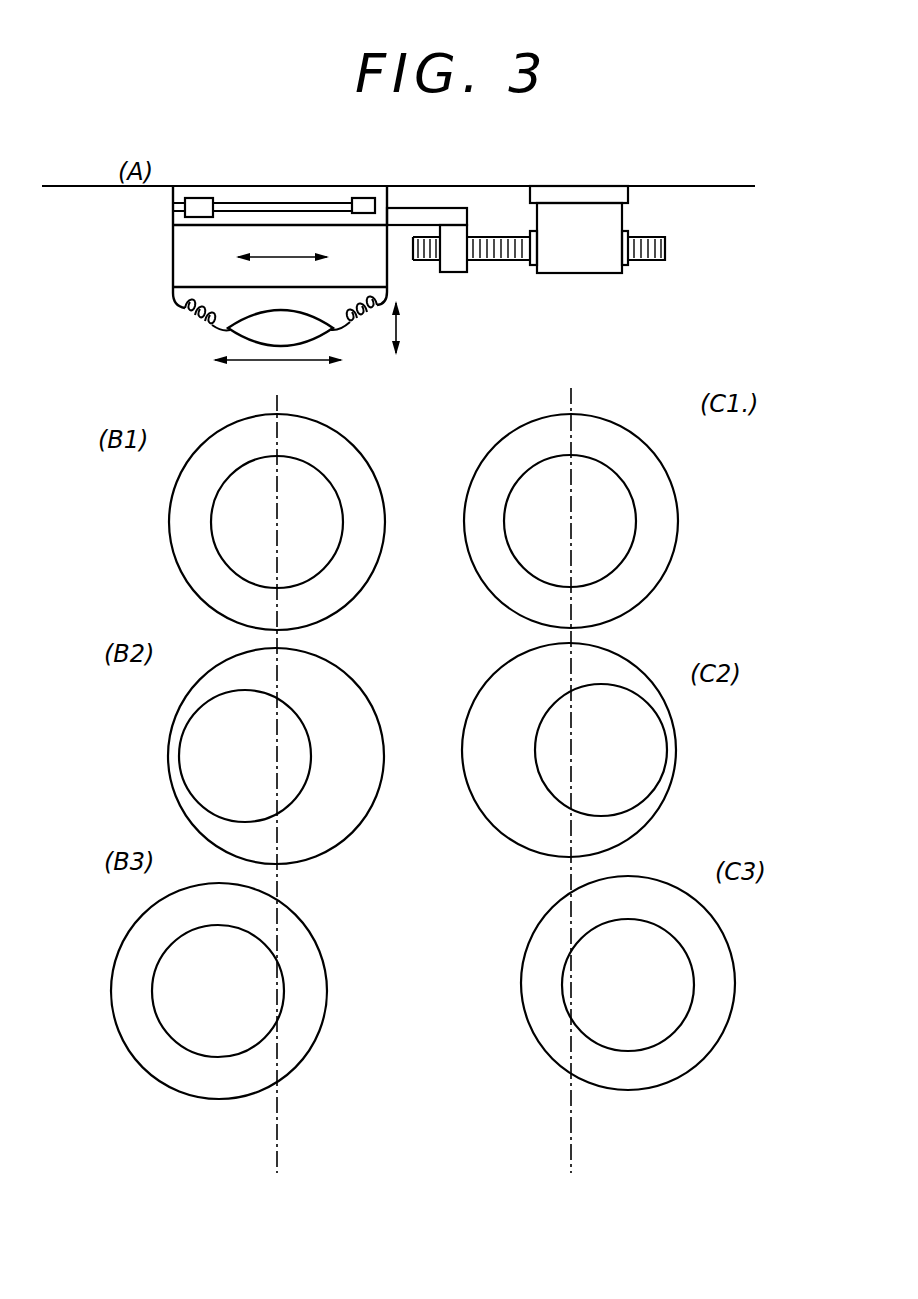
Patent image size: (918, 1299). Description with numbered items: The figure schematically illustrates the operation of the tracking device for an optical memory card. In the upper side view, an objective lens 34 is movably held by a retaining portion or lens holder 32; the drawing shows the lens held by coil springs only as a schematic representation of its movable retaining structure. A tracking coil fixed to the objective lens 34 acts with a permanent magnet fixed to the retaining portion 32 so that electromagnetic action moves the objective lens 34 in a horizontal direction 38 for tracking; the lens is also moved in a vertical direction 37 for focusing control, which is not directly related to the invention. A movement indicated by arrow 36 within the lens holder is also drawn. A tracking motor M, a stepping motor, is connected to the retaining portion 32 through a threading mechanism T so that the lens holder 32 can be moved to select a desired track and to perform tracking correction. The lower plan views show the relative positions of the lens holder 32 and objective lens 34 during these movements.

The retaining portion 32 is at (173, 237).
The objective lens 34 is at (237, 330).
The lens holder movement direction 36 is at (286, 258).
The vertical direction 37 is at (399, 330).
The horizontal direction 38 is at (287, 362).
The threading mechanism T is at (490, 262).
The tracking motor M is at (580, 262).